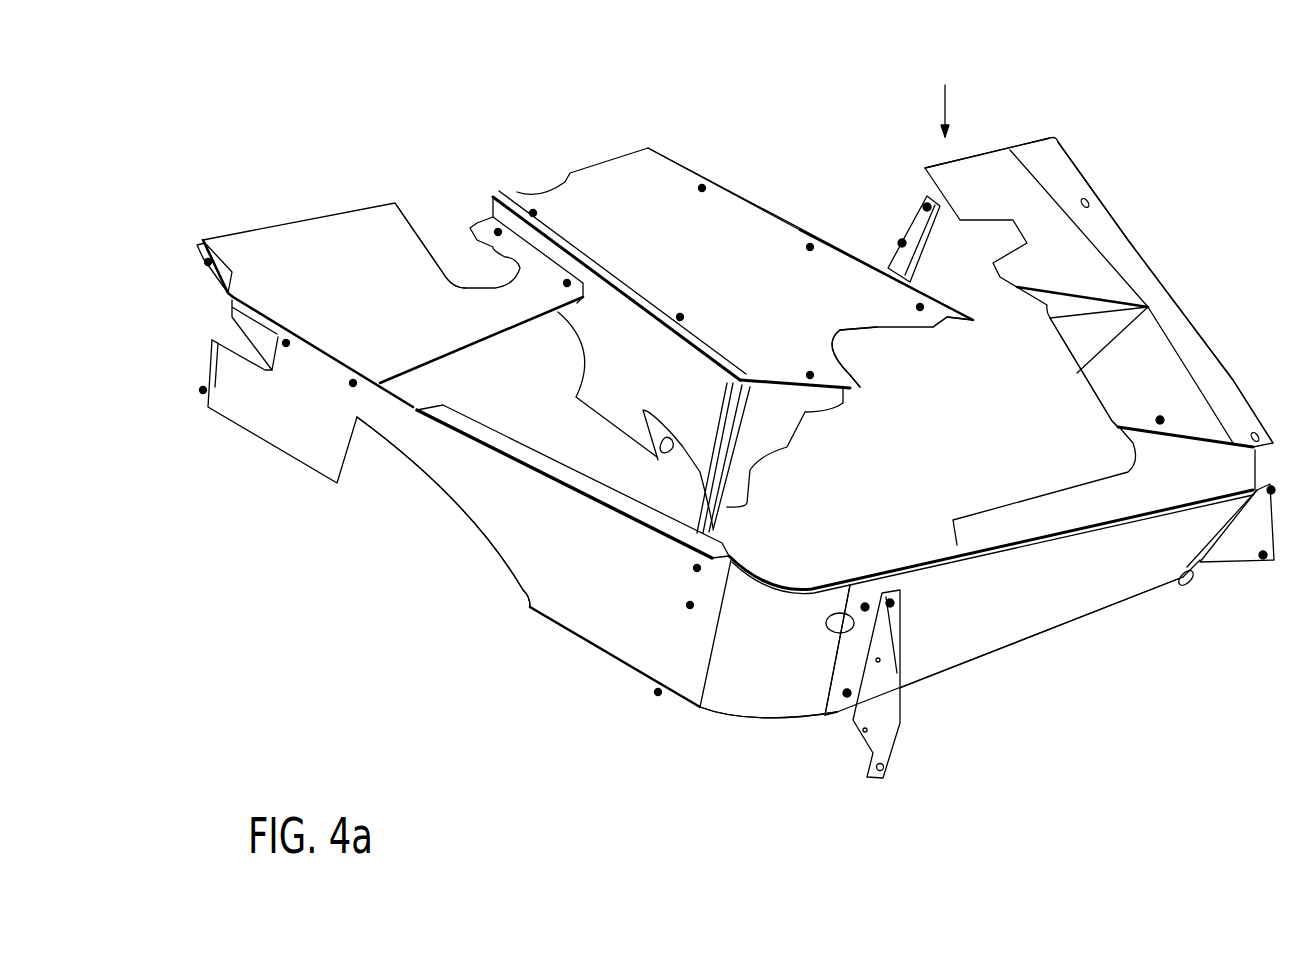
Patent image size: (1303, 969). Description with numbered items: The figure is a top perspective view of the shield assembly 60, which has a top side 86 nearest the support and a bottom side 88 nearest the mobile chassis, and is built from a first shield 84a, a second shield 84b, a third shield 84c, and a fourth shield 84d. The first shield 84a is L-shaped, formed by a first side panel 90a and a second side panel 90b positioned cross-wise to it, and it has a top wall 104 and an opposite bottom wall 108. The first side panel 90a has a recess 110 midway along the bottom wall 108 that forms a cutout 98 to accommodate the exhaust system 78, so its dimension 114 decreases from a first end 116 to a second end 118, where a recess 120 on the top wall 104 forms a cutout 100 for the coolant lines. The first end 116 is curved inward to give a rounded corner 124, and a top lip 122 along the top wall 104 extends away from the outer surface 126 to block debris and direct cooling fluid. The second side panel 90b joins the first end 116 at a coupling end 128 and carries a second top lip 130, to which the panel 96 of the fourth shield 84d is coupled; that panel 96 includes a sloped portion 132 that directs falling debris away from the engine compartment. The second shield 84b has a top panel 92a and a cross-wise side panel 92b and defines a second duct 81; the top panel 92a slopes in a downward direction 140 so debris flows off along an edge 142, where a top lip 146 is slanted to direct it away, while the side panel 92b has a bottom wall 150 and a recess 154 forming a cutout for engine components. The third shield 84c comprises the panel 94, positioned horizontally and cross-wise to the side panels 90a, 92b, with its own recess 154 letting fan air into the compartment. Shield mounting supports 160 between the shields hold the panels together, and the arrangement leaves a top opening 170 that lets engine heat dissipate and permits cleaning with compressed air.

The shield assembly 60 is at (1160, 157).
The exhaust system 78 is at (840, 553).
The second duct 81 is at (888, 350).
The first shield 84a is at (937, 685).
The second shield 84b is at (672, 150).
The third shield 84c is at (300, 217).
The fourth shield 84d is at (1230, 365).
The top side 86 is at (765, 165).
The bottom side 88 is at (590, 710).
The first side panel 90a is at (535, 608).
The second side panel 90b is at (1075, 622).
The top panel 92a is at (780, 225).
The side panel 92b is at (577, 353).
The panel 94 is at (240, 243).
The panel 96 is at (1150, 265).
The cutout 98 is at (385, 505).
The cutout 100 is at (200, 332).
The top wall 104 is at (405, 375).
The bottom wall 108 is at (608, 668).
The recess 110 is at (453, 500).
The dimension 114 is at (582, 647).
The first end 116 is at (850, 580).
The second end 118 is at (203, 393).
The recess 120 is at (268, 372).
The top lip 122 is at (735, 575).
The rounded corner 124 is at (782, 730).
The outer surface 126 is at (550, 607).
The coupling end 128 is at (827, 717).
The second top lip 130 is at (1137, 480).
The sloped portion 132 is at (1125, 350).
The downward direction 140 is at (655, 455).
The edge 142 is at (727, 187).
The top lip 146 is at (960, 325).
The bottom wall 150 is at (597, 423).
The recess 154 is at (413, 220).
The shield mounting support 160 is at (745, 518).
The top opening 170 is at (1053, 447).